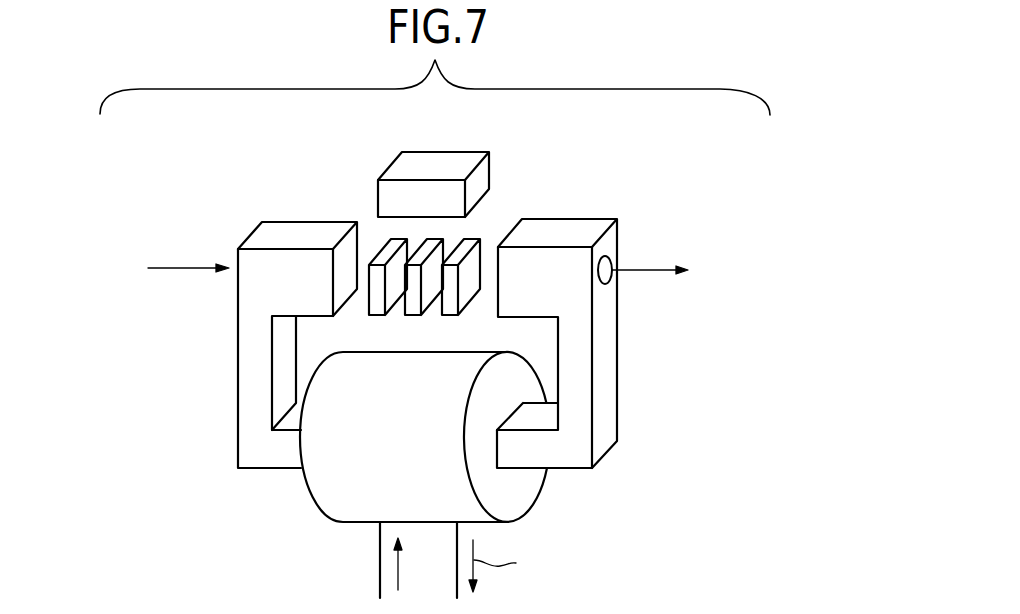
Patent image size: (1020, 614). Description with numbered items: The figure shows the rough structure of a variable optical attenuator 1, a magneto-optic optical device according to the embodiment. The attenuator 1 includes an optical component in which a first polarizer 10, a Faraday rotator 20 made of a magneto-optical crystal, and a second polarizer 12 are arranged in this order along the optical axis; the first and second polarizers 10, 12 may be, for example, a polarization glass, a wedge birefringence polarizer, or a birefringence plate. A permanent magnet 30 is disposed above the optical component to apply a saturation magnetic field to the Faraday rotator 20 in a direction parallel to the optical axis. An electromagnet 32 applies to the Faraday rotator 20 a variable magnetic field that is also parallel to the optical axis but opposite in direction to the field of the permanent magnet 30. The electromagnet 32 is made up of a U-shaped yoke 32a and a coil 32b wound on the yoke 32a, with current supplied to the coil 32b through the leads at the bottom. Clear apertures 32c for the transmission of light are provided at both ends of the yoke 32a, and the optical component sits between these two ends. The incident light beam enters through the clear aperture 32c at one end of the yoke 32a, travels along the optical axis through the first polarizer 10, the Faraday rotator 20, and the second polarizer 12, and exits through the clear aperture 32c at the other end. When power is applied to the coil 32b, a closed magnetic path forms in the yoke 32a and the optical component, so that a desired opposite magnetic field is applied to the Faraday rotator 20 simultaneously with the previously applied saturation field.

The variable optical attenuator 1 is at (603, 155).
The first polarizer 10 is at (390, 241).
The Faraday rotator 20 is at (447, 239).
The second polarizer 12 is at (481, 240).
The permanent magnet 30 is at (430, 163).
The electromagnet 32 is at (698, 400).
The U-shaped yoke 32a is at (607, 413).
The coil 32b is at (513, 495).
The clear aperture 32c is at (610, 259).